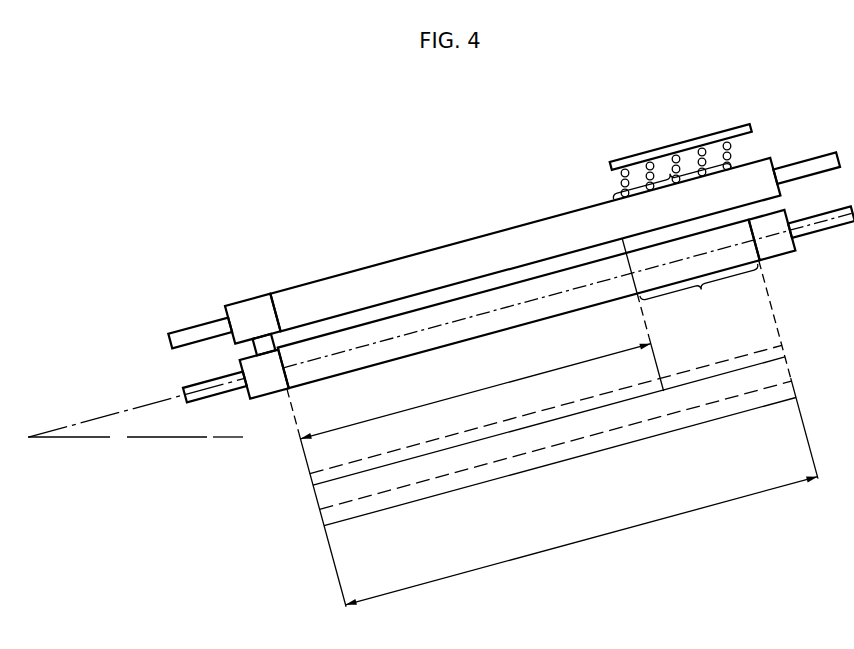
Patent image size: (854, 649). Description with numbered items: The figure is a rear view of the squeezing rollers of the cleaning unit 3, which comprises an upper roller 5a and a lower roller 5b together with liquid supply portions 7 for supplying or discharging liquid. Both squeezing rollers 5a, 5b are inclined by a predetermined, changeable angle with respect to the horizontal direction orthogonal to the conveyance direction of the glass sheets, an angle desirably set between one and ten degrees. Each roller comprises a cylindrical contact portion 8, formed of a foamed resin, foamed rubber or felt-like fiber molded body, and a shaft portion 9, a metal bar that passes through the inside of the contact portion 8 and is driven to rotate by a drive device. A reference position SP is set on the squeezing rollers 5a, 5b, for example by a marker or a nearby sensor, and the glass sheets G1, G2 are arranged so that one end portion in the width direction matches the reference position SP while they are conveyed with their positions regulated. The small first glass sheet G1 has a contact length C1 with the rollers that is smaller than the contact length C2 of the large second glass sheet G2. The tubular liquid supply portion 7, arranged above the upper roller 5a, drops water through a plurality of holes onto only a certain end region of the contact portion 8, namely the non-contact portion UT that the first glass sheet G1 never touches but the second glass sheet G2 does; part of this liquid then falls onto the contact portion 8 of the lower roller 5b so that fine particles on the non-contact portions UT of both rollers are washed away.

The cleaning unit 3 is at (445, 160).
The upper squeezing roller 5a is at (234, 292).
The lower squeezing roller 5b is at (267, 404).
The liquid supply portion 7 is at (664, 147).
The contact portion 8 is at (330, 278).
The shaft portion 9 is at (812, 159).
The reference position SP is at (271, 334).
The non-contact portion UT is at (685, 240).
The contact length of the first glass sheet C1 is at (484, 422).
The contact length of the second glass sheet C2 is at (552, 433).
The first glass sheet G1 is at (612, 392).
The second glass sheet G2 is at (630, 444).